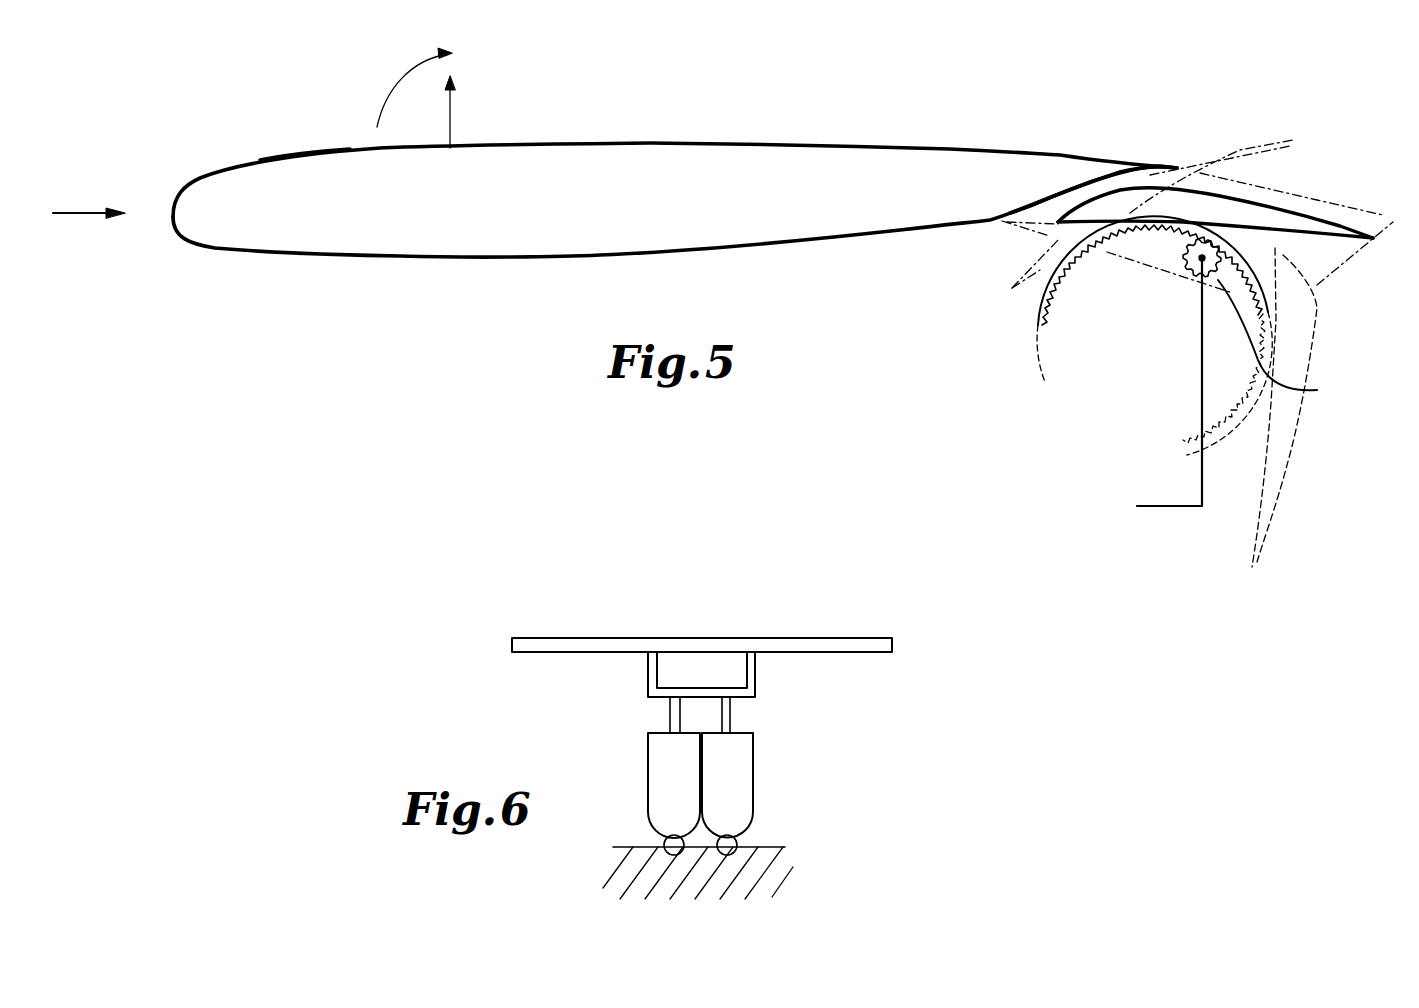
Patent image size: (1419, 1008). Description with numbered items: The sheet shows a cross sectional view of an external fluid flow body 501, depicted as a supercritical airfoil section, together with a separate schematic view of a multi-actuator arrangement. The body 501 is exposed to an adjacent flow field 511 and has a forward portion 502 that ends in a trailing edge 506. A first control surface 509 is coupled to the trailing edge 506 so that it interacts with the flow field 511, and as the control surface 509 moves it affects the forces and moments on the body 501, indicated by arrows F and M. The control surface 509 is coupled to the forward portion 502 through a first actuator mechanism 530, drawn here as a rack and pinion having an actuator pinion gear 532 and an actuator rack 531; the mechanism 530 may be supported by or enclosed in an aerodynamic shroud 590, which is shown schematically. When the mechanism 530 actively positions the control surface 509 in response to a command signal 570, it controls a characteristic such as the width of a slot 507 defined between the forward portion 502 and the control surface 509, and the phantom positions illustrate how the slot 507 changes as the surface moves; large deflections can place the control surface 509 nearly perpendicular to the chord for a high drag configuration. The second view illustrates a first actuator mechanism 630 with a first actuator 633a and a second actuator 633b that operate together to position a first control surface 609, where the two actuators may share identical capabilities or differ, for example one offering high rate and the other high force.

In FIG. 5, the external fluid flow body 501 is at (789, 116).
In FIG. 5, the forward portion 502 is at (293, 149).
In FIG. 5, the trailing edge 506 is at (1177, 168).
In FIG. 5, the slot 507 is at (1043, 213).
In FIG. 5, the first control surface 509 is at (1262, 205).
In FIG. 5, the flow field 511 is at (67, 212).
In FIG. 5, the first actuator mechanism 530 is at (1177, 273).
In FIG. 5, the actuator rack 531 is at (1063, 285).
In FIG. 5, the actuator pinion gear 532 is at (1303, 388).
In FIG. 5, the command signal 570 is at (1177, 507).
In FIG. 5, the aerodynamic shroud 590 is at (1383, 215).
In FIG. 6, the first control surface 609 is at (843, 652).
In FIG. 6, the first actuator mechanism 630 is at (798, 808).
In FIG. 6, the first actuator 633a is at (647, 758).
In FIG. 6, the second actuator 633b is at (755, 762).